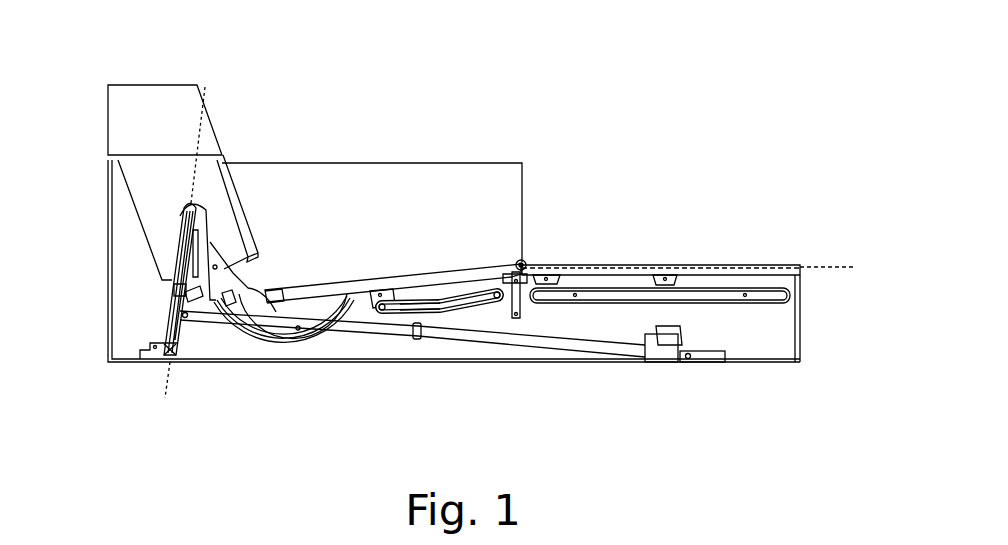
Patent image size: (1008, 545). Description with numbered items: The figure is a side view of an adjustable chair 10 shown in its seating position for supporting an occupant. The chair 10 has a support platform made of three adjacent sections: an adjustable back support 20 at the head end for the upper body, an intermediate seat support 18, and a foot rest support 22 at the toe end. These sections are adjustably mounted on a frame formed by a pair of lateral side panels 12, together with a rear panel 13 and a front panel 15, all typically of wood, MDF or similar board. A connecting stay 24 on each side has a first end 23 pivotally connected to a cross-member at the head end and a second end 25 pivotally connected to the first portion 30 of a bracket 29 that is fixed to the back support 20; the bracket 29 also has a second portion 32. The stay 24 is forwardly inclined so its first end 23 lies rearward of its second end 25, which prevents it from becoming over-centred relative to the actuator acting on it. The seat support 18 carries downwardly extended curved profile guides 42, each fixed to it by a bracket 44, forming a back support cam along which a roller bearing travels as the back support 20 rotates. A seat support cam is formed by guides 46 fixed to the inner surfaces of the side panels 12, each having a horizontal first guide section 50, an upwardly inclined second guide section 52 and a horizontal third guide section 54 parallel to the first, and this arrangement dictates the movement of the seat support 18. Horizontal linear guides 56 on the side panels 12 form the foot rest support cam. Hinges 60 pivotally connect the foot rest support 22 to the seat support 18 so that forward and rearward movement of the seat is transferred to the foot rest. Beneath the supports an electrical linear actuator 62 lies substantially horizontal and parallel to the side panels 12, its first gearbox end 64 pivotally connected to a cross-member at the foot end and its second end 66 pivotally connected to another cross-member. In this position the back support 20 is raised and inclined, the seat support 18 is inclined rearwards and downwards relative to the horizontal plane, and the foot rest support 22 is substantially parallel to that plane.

The chair 10 is at (128, 414).
The lateral side panels 12 is at (387, 207).
The rear panel 13 is at (108, 330).
The front panel 15 is at (800, 340).
The seat support section 18 is at (420, 272).
The back support section 20 is at (172, 98).
The foot rest support section 22 is at (728, 272).
The first end 23 is at (178, 358).
The connecting stay 24 is at (181, 330).
The second end 25 is at (183, 206).
The bracket 29 is at (268, 248).
The first portion 30 is at (190, 205).
The second portion 32 is at (221, 251).
The curved profile guides 42 is at (267, 342).
The bracket 44 is at (317, 325).
The guides 46 is at (412, 340).
The first guide section 50 is at (387, 300).
The second guide section 52 is at (468, 318).
The third guide section 54 is at (492, 303).
The horizontal linear guides 56 is at (740, 302).
The hinges 60 is at (526, 262).
The electrical linear actuator 62 is at (588, 348).
The first gearbox end 64 is at (697, 364).
The second end 66 is at (183, 322).